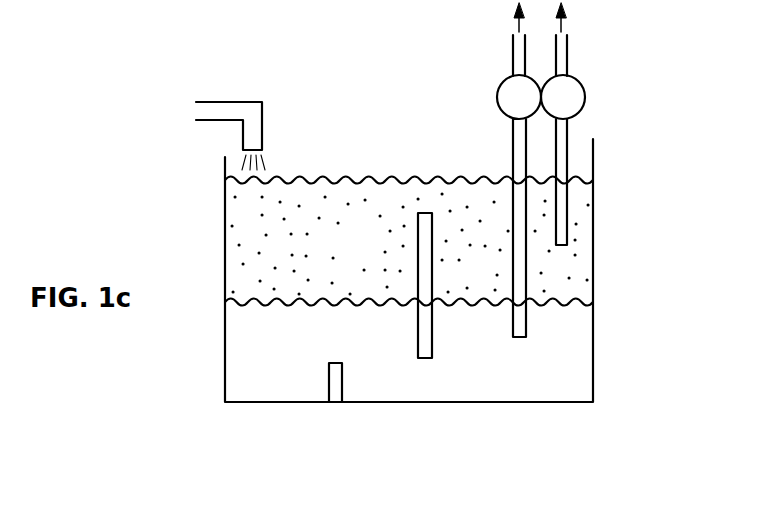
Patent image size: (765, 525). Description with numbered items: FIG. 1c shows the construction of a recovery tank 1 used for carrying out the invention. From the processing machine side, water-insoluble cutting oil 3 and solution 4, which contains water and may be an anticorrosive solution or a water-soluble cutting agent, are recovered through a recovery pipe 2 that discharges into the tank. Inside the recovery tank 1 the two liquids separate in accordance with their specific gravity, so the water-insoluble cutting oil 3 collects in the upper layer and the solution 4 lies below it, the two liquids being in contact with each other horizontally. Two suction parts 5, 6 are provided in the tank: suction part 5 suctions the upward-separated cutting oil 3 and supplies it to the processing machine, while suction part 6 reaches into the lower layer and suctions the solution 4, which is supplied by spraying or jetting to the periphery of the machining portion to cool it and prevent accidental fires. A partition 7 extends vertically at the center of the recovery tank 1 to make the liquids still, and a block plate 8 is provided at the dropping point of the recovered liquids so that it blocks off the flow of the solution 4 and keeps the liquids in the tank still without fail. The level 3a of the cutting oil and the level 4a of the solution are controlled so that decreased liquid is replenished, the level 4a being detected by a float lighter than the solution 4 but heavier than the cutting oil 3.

The recovery tank 1 is at (598, 262).
The recovery pipe 2 is at (244, 102).
The water-insoluble cutting oil 3 is at (372, 251).
The level of the water-insoluble cutting oil 3a is at (323, 179).
The solution 4 is at (376, 346).
The level of the solution 4a is at (238, 303).
The suction part 5 is at (568, 134).
The suction part 6 is at (512, 140).
The partition 7 is at (433, 340).
The block plate 8 is at (343, 381).